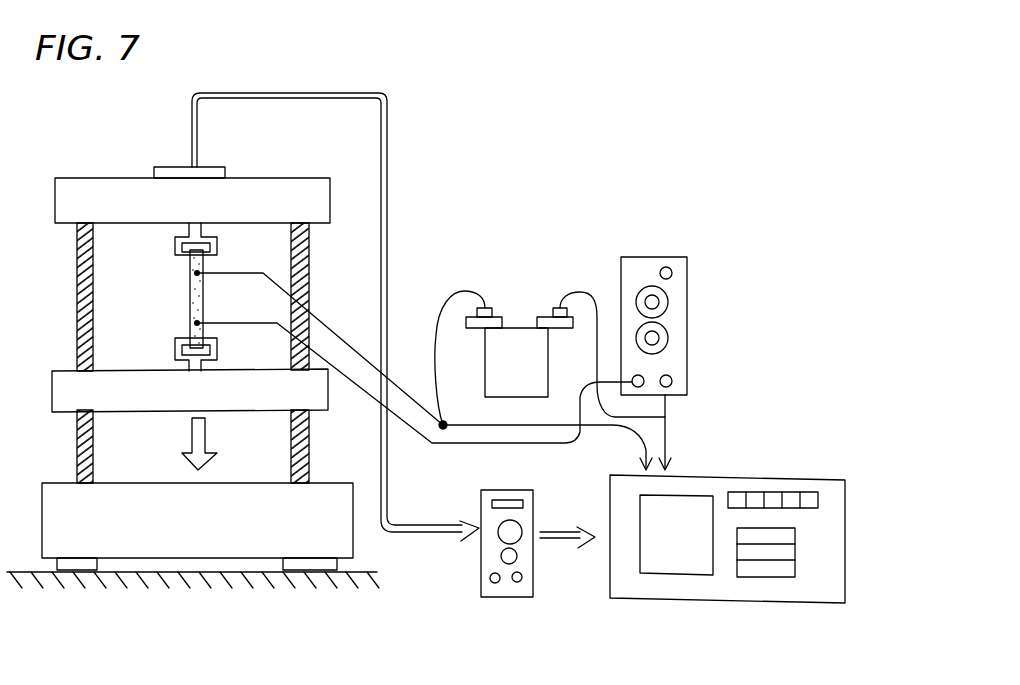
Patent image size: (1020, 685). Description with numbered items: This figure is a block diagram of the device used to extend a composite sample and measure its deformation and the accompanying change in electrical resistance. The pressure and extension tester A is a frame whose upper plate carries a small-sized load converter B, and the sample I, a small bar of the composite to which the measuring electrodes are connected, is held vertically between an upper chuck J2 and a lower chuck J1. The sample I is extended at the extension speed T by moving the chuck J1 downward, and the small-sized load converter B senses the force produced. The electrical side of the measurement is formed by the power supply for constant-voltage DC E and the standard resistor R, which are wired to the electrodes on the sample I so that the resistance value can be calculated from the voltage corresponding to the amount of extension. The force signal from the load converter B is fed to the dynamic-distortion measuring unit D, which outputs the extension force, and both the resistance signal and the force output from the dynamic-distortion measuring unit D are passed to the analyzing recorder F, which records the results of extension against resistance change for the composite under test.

The pressure and extension tester A is at (266, 176).
The small-sized load converter B is at (167, 167).
The chuck J1 is at (217, 350).
The chuck J2 is at (217, 245).
The sample I is at (190, 290).
The extension speed T is at (183, 444).
The standard resistor R is at (513, 328).
The power supply for constant-voltage DC E is at (645, 257).
The dynamic-distortion measuring unit D is at (520, 492).
The analyzing recorder F is at (725, 478).